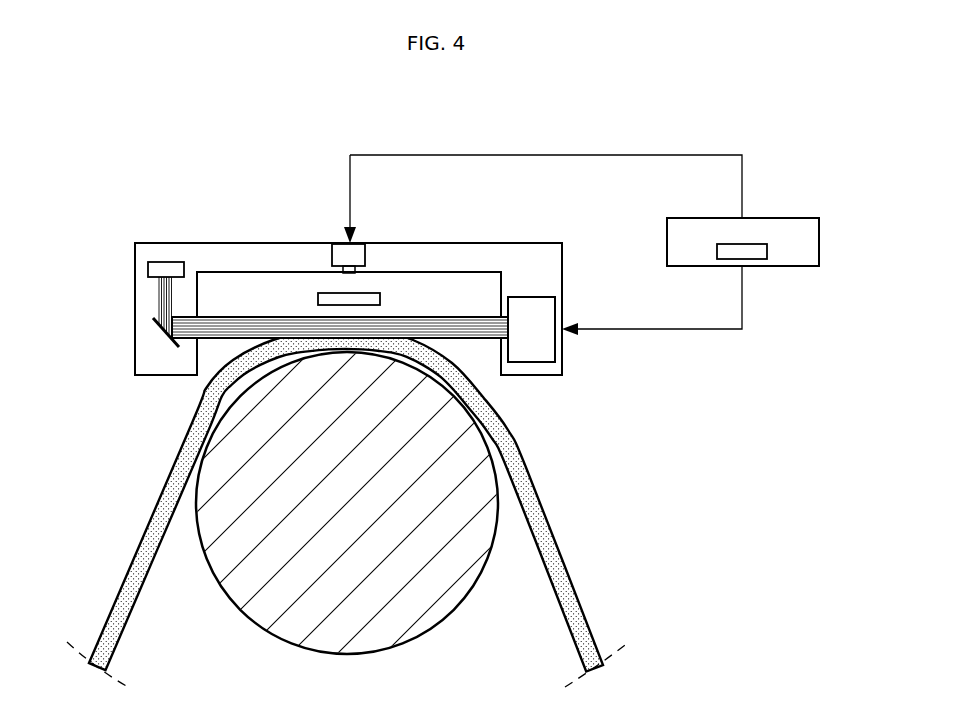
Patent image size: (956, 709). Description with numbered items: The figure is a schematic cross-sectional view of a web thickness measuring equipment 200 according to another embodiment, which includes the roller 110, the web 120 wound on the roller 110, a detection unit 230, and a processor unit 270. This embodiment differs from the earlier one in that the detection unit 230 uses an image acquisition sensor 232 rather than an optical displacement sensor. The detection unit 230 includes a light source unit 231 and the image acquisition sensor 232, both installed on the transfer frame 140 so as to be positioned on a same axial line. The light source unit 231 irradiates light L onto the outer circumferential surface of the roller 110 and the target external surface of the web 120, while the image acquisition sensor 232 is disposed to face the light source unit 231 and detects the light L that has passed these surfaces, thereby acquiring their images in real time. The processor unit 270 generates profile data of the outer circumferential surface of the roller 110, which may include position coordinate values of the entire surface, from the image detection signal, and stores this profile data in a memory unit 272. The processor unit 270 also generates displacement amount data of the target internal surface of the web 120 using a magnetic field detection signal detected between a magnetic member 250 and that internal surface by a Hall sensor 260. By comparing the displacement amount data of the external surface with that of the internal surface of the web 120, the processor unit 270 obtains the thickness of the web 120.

The web thickness measuring equipment 200 is at (68, 123).
The roller 110 is at (430, 617).
The web 120 is at (553, 540).
The transfer frame 140 is at (202, 243).
The detection unit 230 is at (311, 313).
The light source unit 231 is at (148, 267).
The image acquisition sensor 232 is at (528, 363).
The magnetic member 250 is at (382, 302).
The Hall sensor 260 is at (365, 256).
The processor unit 270 is at (614, 245).
The memory unit 272 is at (767, 251).
The light L is at (233, 338).